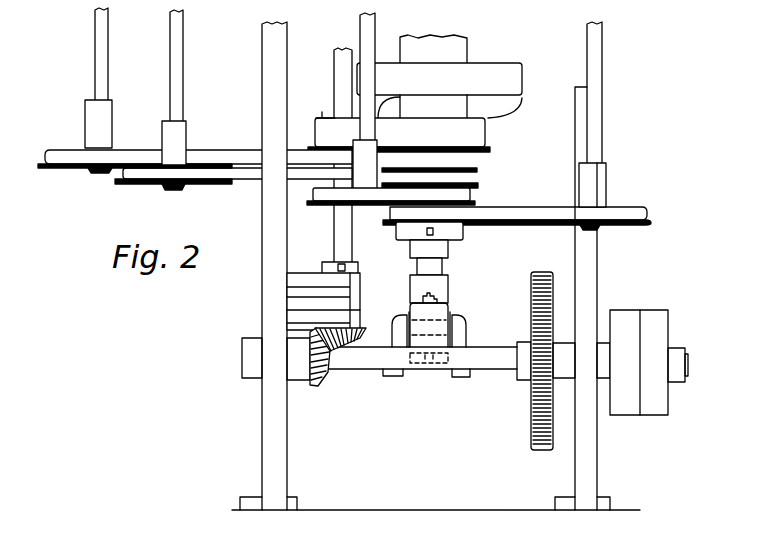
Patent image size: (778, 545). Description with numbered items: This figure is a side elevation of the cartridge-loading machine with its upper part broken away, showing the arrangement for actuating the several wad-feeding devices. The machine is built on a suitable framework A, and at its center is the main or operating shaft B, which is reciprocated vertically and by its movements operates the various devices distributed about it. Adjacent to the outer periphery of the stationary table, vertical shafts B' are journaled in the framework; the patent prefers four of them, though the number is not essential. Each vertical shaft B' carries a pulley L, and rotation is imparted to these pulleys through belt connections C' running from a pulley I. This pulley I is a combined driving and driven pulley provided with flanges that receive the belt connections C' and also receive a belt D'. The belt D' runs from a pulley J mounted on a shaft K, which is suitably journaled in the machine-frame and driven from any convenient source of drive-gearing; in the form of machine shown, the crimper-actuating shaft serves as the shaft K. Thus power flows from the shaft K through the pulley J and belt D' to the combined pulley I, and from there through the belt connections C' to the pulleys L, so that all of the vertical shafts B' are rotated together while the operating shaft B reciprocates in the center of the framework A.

The framework A is at (262, 285).
The main operating shaft B is at (433, 292).
The vertical shafts B' is at (339, 107).
The belt connections C' is at (346, 174).
The belt D' is at (415, 132).
The combined driving and driven pulley I is at (478, 152).
The pulley J is at (322, 112).
The shaft K is at (342, 67).
The pulley L is at (130, 187).